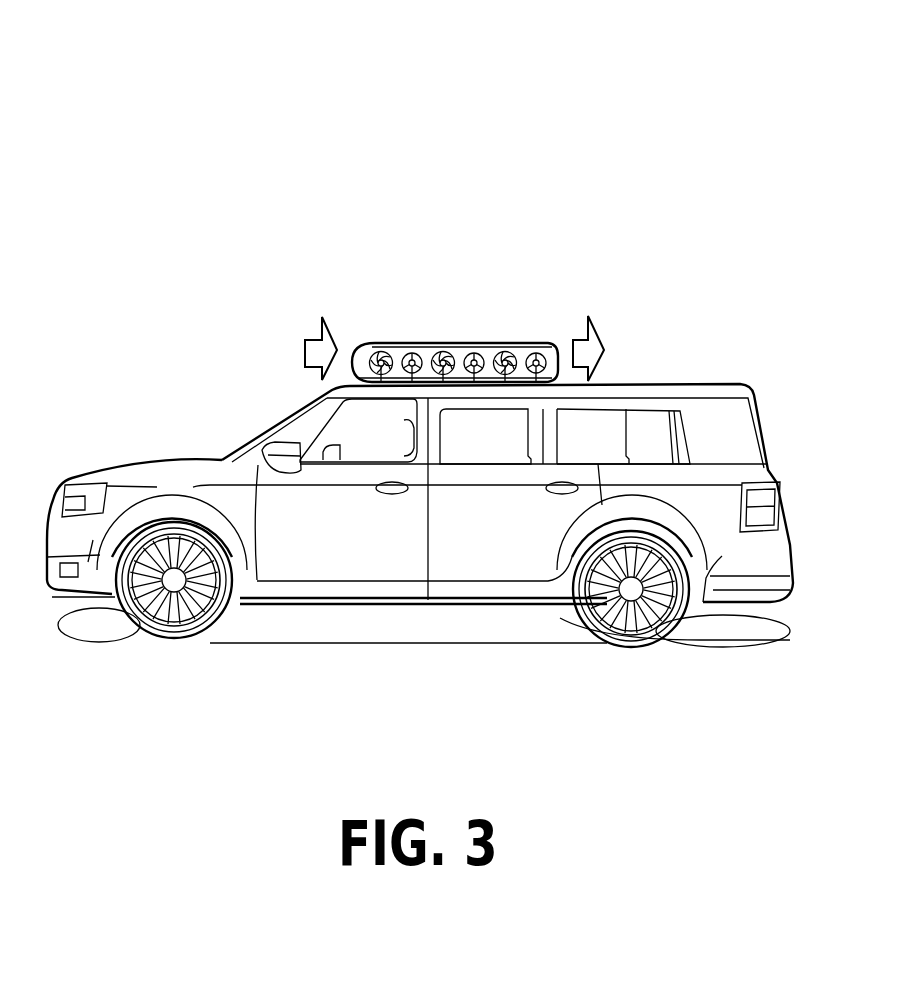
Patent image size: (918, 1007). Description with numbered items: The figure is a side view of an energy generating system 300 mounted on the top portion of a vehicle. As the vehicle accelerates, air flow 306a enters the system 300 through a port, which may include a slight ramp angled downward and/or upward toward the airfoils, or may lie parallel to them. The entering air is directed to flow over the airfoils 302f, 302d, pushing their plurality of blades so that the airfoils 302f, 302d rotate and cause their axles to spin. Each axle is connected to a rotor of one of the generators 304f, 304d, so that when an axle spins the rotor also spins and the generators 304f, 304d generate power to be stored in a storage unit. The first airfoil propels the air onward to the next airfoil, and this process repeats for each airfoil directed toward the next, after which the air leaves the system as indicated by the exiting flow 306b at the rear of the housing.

The energy generating system 300 is at (420, 328).
The airfoil 302f is at (382, 343).
The generator 304f is at (422, 340).
The airfoil 302d is at (513, 343).
The generator 304d is at (553, 342).
The air flow / port 306a is at (270, 349).
The outgoing airflow direction 306b is at (638, 350).